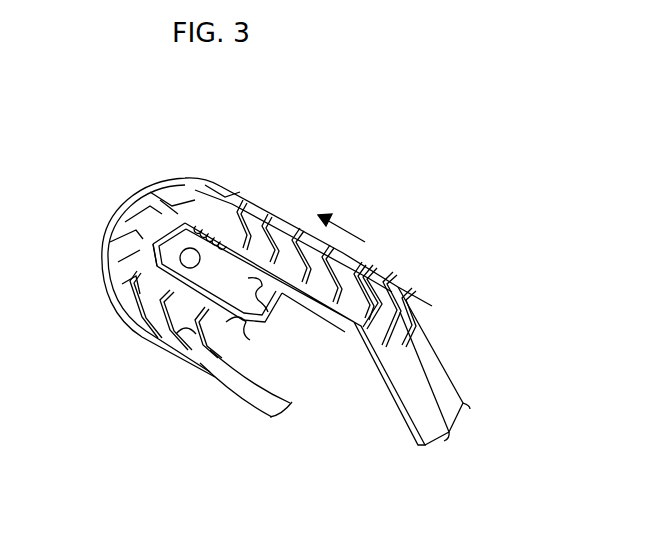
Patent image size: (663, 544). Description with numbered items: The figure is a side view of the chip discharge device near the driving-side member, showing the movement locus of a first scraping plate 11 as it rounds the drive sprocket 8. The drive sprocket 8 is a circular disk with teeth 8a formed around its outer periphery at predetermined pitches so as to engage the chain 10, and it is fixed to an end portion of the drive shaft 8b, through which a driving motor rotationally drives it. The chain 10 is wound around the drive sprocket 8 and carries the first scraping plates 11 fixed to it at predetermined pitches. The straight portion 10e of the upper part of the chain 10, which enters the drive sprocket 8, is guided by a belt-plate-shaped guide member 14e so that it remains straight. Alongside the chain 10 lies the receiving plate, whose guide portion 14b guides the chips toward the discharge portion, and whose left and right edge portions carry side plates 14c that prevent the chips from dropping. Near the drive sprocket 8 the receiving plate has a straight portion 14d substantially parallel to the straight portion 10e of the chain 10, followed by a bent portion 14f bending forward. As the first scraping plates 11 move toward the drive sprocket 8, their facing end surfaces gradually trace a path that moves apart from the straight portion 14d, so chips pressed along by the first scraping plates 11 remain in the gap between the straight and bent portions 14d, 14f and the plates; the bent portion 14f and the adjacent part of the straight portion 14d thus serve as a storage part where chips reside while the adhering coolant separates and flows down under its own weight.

The bent portion 14f is at (160, 236).
The straight portion 14d is at (252, 245).
The guide member 14e is at (318, 288).
The straight portion 10e is at (345, 230).
The first scraping plate 11 is at (393, 293).
The chain 10 is at (443, 376).
The side plate 14c is at (435, 432).
The guide portion 14b is at (375, 365).
The drive sprocket 8 is at (260, 318).
The drive shaft 8b is at (158, 262).
The teeth 8a is at (230, 318).